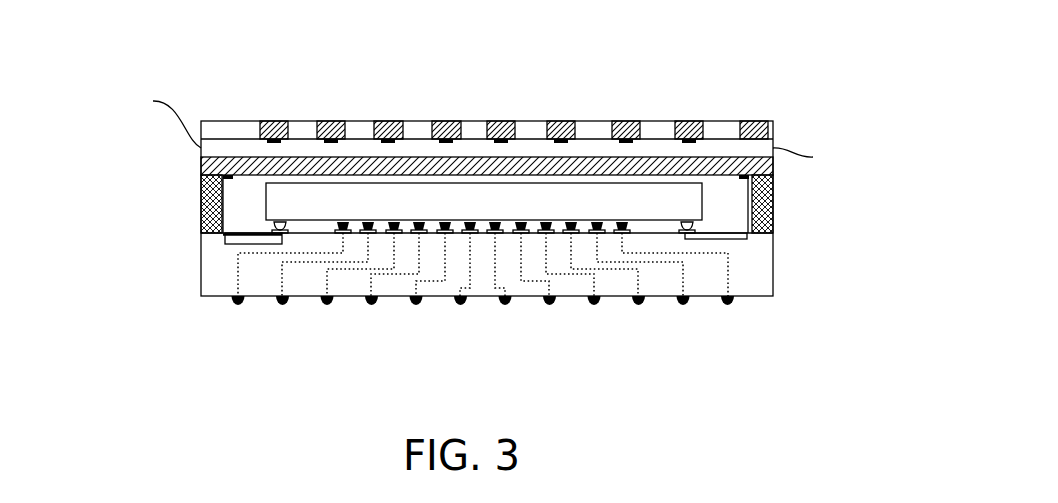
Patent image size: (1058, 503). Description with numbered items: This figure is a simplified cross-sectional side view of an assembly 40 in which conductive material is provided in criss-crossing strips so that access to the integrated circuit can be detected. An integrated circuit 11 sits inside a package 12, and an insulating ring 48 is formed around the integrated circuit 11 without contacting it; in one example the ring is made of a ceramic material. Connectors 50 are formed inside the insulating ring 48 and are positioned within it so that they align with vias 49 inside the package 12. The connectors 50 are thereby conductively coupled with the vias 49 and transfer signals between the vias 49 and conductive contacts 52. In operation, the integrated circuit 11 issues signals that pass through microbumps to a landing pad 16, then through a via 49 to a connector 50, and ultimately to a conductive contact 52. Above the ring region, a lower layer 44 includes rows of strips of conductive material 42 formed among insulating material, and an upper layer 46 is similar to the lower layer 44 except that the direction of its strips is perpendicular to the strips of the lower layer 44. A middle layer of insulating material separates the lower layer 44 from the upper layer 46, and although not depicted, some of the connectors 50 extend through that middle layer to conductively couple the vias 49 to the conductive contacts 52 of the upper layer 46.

The assembly 40 is at (614, 41).
The package 12 is at (218, 297).
The integrated circuit 11 is at (590, 214).
The landing pad 16 is at (680, 234).
The conductive material 42 is at (537, 120).
The lower layer 44 is at (201, 168).
The upper layer 46 is at (773, 129).
The insulating ring 48 is at (835, 213).
The vias 49 is at (227, 244).
The connectors 50 is at (223, 215).
The conductive contacts 52 is at (744, 175).